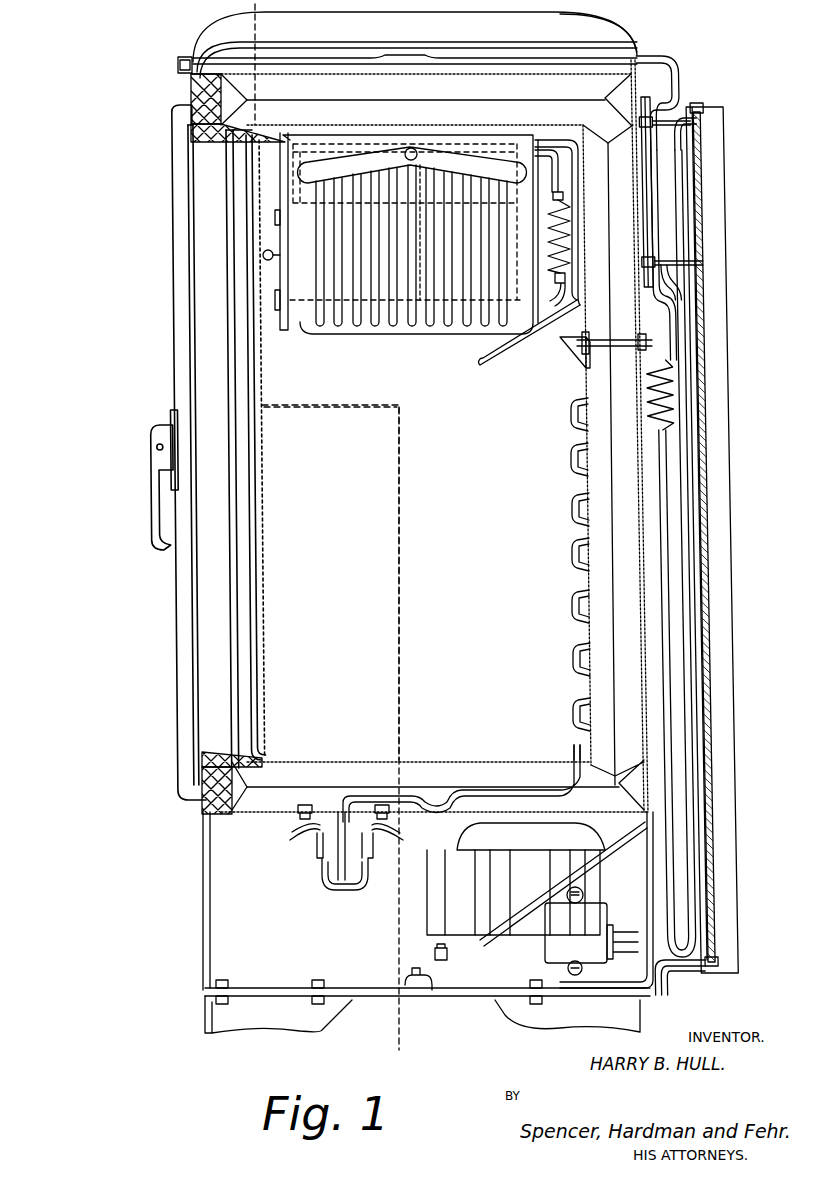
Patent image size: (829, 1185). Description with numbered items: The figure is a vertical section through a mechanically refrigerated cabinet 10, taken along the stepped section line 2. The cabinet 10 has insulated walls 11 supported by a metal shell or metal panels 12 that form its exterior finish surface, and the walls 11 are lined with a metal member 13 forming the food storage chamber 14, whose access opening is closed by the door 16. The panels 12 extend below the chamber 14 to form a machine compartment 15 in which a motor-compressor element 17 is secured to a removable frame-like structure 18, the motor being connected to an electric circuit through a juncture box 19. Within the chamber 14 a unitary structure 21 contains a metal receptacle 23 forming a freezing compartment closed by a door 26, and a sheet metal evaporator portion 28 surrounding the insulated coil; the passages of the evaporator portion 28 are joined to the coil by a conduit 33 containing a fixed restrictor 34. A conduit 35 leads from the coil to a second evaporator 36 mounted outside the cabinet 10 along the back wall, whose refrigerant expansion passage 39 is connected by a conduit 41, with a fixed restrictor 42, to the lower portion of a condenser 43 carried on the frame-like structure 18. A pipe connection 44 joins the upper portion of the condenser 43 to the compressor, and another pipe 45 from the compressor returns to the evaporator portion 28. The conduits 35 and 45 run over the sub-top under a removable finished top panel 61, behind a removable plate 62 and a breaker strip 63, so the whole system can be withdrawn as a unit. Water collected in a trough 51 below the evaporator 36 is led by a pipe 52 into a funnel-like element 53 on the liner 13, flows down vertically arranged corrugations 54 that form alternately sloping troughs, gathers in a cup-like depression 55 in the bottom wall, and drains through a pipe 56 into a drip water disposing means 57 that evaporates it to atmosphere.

The section line 2- 2 is at (246, 18).
The cabinet 10 is at (205, 848).
The insulated walls 11 is at (490, 100).
The metal shell or metal panels 12 is at (200, 805).
The metal liner member 13 is at (580, 692).
The food storage chamber 14 is at (331, 583).
The machine compartment 15 is at (428, 901).
The door 16 is at (205, 675).
The motor-compressor element 17 is at (487, 843).
The frame-like structure 18 is at (495, 960).
The juncture box 19 is at (562, 936).
The unitary evaporator structure 21 is at (305, 300).
The metal receptacle 23 is at (420, 300).
The door 26 is at (280, 281).
The sheet metal evaporator portion 28 is at (372, 312).
The conduit 33 is at (562, 175).
The fixed restrictor 34 is at (563, 237).
The conduit 35 is at (280, 150).
The evaporator 36 is at (655, 220).
The refrigerant expansion passage 39 is at (680, 167).
The conduit 41 is at (660, 342).
The fixed restrictor 42 is at (670, 397).
The condenser 43 is at (712, 633).
The pipe connection 44 is at (700, 142).
The pipe 45 is at (683, 100).
The trough 51 is at (655, 304).
The pipe 52 is at (621, 336).
The funnel-like element 53 is at (568, 357).
The corrugations 54 is at (577, 428).
The cup-like depression 55 is at (576, 752).
The pipe or conduit 56 is at (470, 783).
The drip water disposing means 57 is at (320, 875).
The finished top panel 61 is at (612, 32).
The removable panel or plate 62 is at (192, 72).
The breaker strip 63 is at (255, 140).